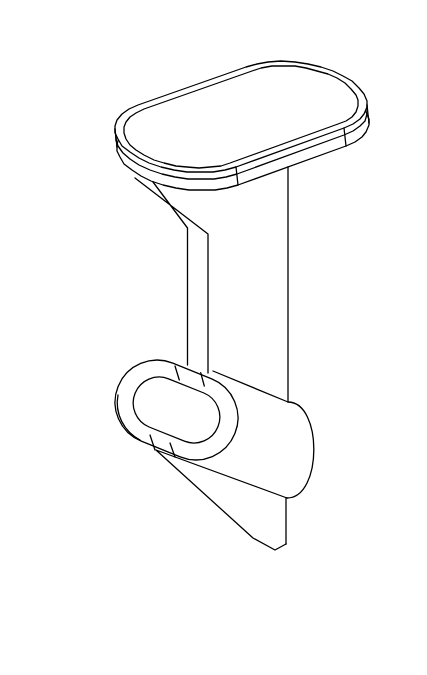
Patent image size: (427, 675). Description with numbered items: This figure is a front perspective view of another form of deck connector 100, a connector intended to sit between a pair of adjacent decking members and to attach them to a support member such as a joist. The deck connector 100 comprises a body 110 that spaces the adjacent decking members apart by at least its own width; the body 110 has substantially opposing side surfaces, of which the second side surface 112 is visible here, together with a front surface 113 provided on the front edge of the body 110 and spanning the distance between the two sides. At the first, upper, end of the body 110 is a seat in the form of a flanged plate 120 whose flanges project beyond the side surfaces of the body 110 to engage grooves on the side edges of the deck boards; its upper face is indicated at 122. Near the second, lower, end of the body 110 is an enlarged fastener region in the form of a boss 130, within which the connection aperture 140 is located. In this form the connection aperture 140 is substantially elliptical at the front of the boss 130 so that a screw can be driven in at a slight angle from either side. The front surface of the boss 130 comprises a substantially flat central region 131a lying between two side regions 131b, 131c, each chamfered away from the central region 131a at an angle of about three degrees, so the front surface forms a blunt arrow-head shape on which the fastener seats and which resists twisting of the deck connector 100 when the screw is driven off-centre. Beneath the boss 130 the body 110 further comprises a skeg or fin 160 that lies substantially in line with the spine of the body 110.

The deck connector 100 is at (140, 60).
The body 110 is at (298, 243).
The second side surface 112 is at (280, 290).
The front surface 113 is at (198, 293).
The flanged plate 120 is at (320, 72).
The top surface of head 122 is at (225, 85).
The boss 130 is at (303, 452).
The central region 131a is at (163, 448).
The side region 131b is at (133, 432).
The side region 131c is at (233, 413).
The connection aperture 140 is at (158, 397).
The skeg or fin 160 is at (285, 523).